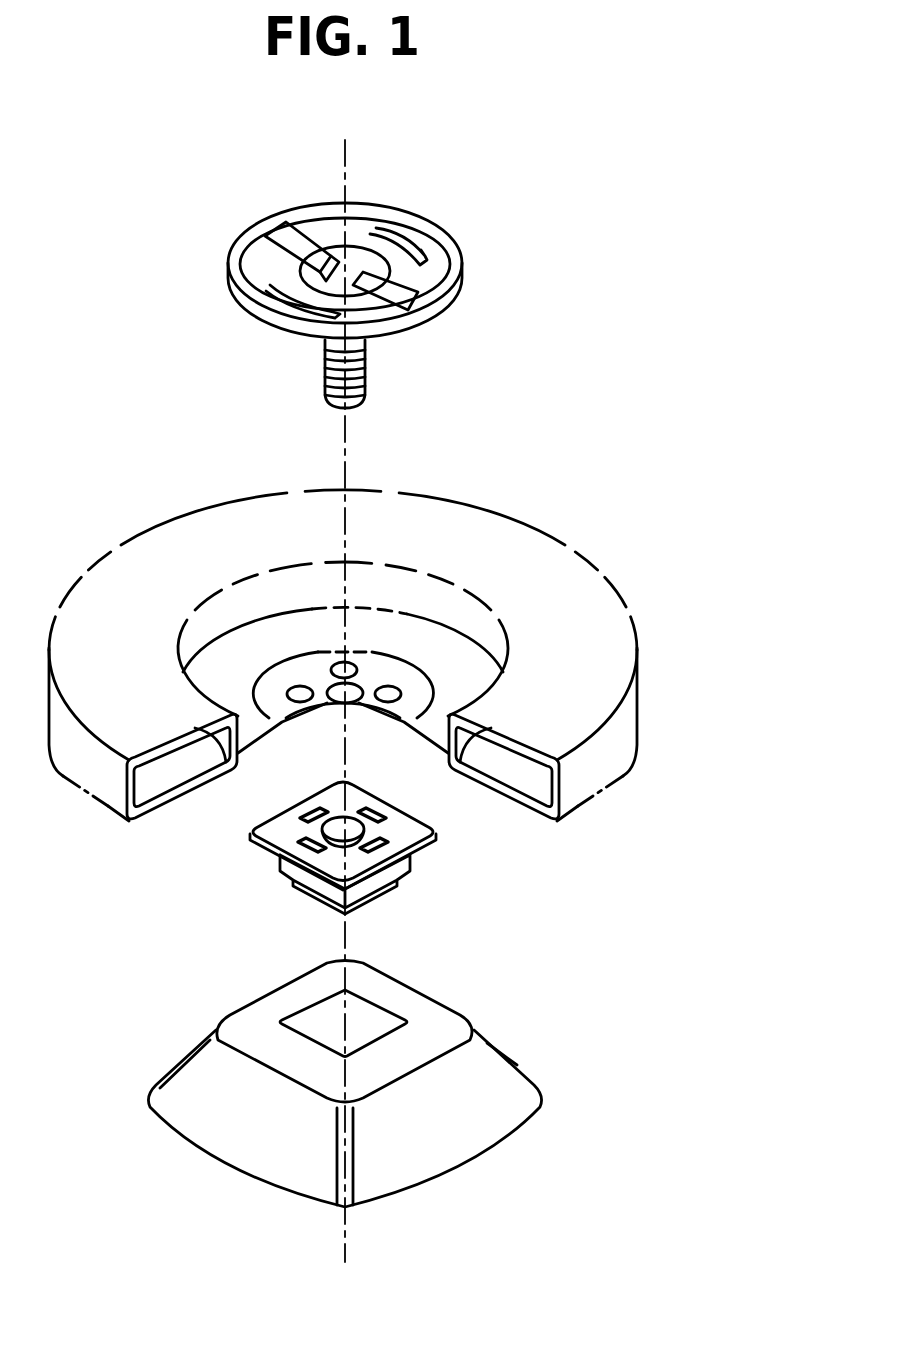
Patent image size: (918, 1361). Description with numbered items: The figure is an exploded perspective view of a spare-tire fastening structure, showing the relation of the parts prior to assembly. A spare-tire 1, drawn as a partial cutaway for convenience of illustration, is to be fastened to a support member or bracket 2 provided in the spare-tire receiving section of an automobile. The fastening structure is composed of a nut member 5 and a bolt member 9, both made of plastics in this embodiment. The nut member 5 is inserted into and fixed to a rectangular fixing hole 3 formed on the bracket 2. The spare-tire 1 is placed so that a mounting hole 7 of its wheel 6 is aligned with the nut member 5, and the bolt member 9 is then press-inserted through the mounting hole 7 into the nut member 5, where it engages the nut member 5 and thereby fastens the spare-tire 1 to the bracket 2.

The spare-tire 1 is at (397, 633).
The bracket 2 is at (358, 1072).
The rectangular fixing hole 3 is at (315, 1018).
The nut member 5 is at (418, 850).
The wheel 6 is at (373, 623).
The mounting hole 7 is at (339, 664).
The bolt member 9 is at (413, 220).